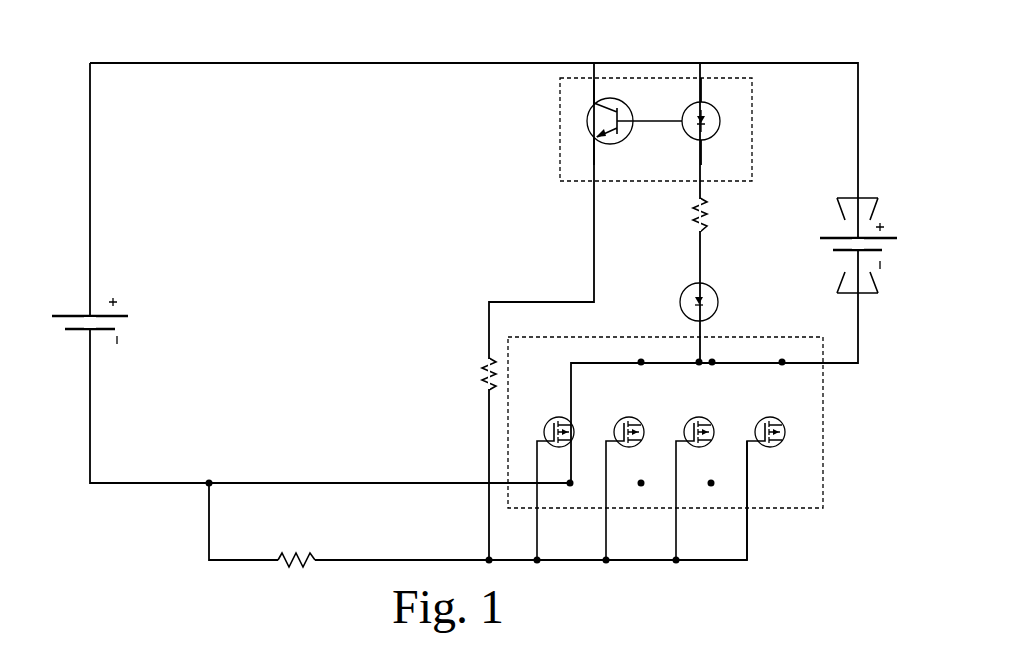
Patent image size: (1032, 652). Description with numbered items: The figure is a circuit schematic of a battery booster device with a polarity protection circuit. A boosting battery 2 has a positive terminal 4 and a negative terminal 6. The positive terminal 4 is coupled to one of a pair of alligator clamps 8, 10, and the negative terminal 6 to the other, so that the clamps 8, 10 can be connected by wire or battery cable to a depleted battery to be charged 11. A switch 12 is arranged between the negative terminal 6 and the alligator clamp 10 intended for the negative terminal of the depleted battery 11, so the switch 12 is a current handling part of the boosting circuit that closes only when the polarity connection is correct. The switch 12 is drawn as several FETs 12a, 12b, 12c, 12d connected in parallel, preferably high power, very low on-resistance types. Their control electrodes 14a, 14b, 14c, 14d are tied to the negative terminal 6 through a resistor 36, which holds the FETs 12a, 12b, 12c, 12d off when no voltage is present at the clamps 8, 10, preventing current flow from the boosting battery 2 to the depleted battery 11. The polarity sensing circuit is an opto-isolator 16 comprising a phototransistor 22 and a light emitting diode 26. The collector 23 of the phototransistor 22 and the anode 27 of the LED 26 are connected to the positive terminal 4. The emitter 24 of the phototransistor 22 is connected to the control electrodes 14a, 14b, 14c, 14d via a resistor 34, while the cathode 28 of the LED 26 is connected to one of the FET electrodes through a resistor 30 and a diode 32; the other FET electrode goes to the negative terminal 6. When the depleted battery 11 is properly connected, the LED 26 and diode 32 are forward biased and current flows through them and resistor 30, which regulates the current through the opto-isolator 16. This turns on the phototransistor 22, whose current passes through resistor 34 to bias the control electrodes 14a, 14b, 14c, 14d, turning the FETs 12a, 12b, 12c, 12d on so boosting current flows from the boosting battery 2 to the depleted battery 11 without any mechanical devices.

The boosting battery 2 is at (75, 314).
The positive terminal 4 is at (113, 287).
The negative terminal 6 is at (108, 354).
The alligator clamp 8 is at (870, 200).
The alligator clamp 10 is at (870, 293).
The battery to be charged 11 is at (875, 246).
The switch 12 is at (823, 443).
The FET 12a is at (563, 447).
The FET 12b is at (633, 447).
The FET 12c is at (703, 447).
The FET 12d is at (775, 447).
The control electrode 14a is at (540, 438).
The control electrode 14b is at (610, 438).
The control electrode 14c is at (680, 438).
The control electrode 14d is at (750, 436).
The opto-isolator 16 is at (655, 77).
The phototransistor 22 is at (622, 140).
The collector 23 is at (595, 88).
The emitter 24 is at (595, 162).
The light emitting diode 26 is at (720, 122).
The anode 27 is at (700, 92).
The cathode 28 is at (702, 152).
The resistor 30 is at (716, 215).
The diode 32 is at (718, 302).
The resistor 34 is at (473, 374).
The resistor 36 is at (296, 574).